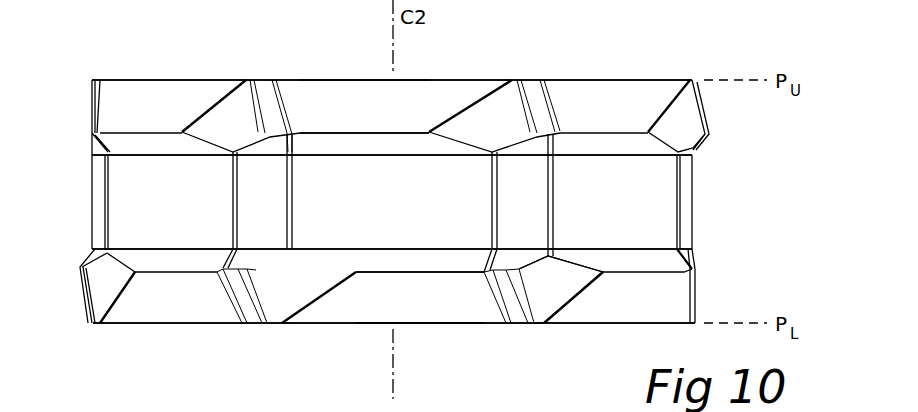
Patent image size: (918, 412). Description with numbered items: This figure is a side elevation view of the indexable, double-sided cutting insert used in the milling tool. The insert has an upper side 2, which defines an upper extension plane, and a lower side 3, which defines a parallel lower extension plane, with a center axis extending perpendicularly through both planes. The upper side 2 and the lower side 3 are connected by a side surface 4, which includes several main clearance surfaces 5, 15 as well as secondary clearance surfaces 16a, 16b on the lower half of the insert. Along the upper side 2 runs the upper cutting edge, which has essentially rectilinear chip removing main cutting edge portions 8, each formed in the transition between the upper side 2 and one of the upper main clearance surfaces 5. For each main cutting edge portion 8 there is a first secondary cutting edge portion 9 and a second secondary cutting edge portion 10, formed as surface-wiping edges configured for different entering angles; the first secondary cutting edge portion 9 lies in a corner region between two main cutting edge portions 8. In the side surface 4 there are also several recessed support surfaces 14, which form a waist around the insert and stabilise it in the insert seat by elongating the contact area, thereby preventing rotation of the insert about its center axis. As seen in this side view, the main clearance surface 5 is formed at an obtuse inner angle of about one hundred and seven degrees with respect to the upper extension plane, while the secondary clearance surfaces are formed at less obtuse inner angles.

The upper side 2 is at (137, 78).
The lower side 3 is at (130, 329).
The side surface 4 is at (100, 192).
The main clearance surface 5 is at (388, 115).
The main cutting edge portion 8 is at (356, 79).
The first secondary cutting edge portion 9 is at (263, 79).
The second secondary cutting edge portion 10 is at (246, 79).
The recessed support surface 14 is at (173, 217).
The main clearance surface 15 is at (422, 311).
The secondary clearance surface 16a is at (519, 313).
The secondary clearance surface 16b is at (572, 290).